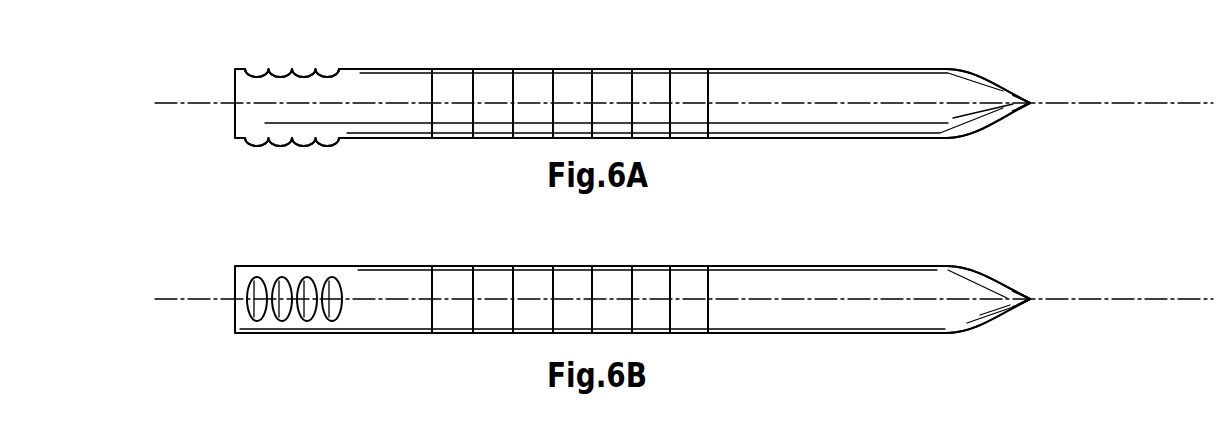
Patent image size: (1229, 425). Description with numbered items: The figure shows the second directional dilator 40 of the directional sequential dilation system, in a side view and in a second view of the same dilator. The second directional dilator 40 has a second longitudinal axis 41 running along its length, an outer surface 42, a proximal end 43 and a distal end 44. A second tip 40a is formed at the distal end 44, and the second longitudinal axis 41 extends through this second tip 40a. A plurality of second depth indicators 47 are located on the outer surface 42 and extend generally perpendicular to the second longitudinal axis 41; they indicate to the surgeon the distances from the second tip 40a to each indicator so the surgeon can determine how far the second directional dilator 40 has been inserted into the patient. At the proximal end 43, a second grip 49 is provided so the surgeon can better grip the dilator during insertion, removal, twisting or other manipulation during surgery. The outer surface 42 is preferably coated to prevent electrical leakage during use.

In FIG. 6A, the second directional dilator 40 is at (675, 73).
In FIG. 6B, the second directional dilator 40 is at (658, 255).
In FIG. 6A, the second tip 40a is at (1031, 103).
In FIG. 6B, the second tip 40a is at (1031, 299).
In FIG. 6A, the second longitudinal axis 41 is at (1148, 100).
In FIG. 6B, the second longitudinal axis 41 is at (1147, 300).
In FIG. 6A, the outer surface 42 is at (573, 92).
In FIG. 6B, the outer surface 42 is at (573, 290).
In FIG. 6A, the proximal end 43 is at (294, 74).
In FIG. 6B, the proximal end 43 is at (277, 255).
In FIG. 6A, the distal end 44 is at (977, 88).
In FIG. 6B, the distal end 44 is at (977, 287).
In FIG. 6A, the second depth indicators 47 is at (433, 87).
In FIG. 6B, the second depth indicators 47 is at (433, 283).
In FIG. 6A, the second grip 49 is at (330, 67).
In FIG. 6B, the second grip 49 is at (330, 278).